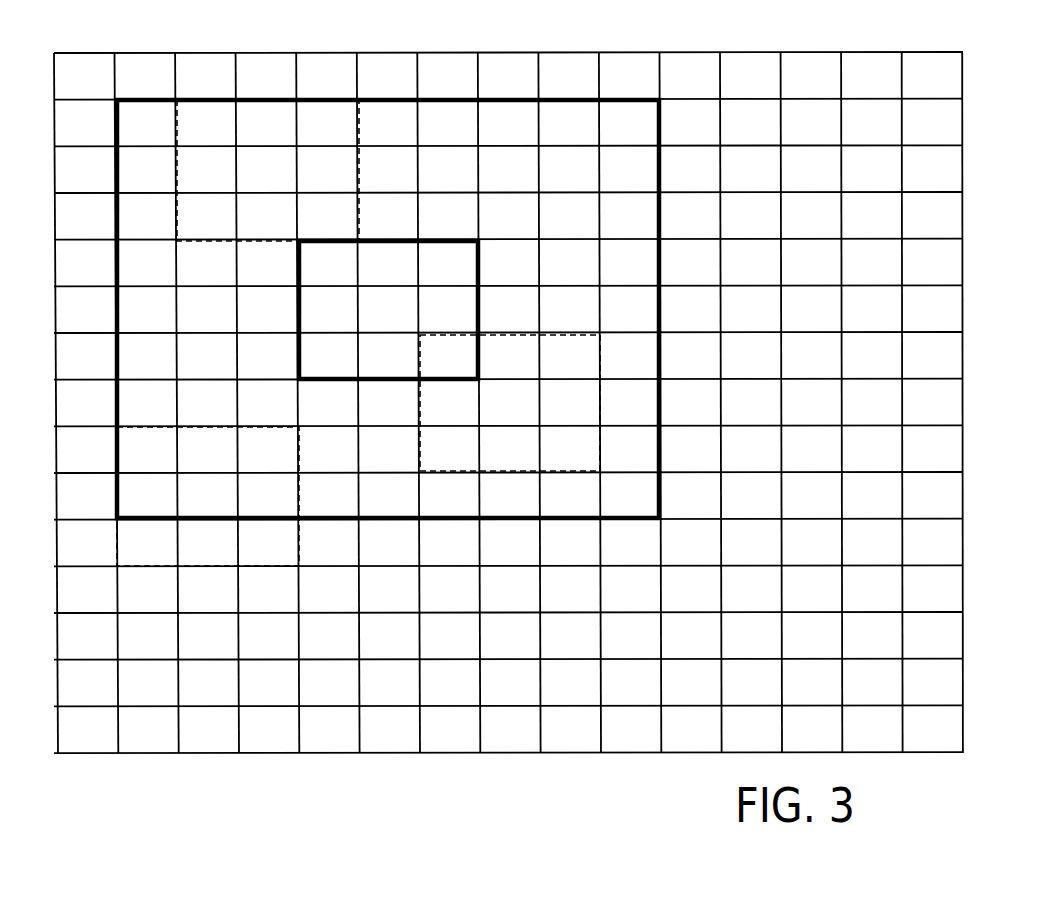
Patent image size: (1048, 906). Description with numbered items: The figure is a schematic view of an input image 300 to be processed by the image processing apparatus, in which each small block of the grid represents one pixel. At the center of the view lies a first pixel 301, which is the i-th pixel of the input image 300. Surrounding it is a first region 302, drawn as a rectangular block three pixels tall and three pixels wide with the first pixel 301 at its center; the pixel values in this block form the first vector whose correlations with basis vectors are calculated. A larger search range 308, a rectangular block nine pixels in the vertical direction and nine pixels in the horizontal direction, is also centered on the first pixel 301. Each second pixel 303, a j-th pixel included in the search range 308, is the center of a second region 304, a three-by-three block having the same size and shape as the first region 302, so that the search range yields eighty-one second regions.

The input image 300 is at (963, 75).
The first pixel 301 is at (385, 290).
The first region 302 is at (450, 238).
The second pixel 303 is at (260, 147).
The second region 304 is at (318, 106).
The search range 308 is at (627, 97).